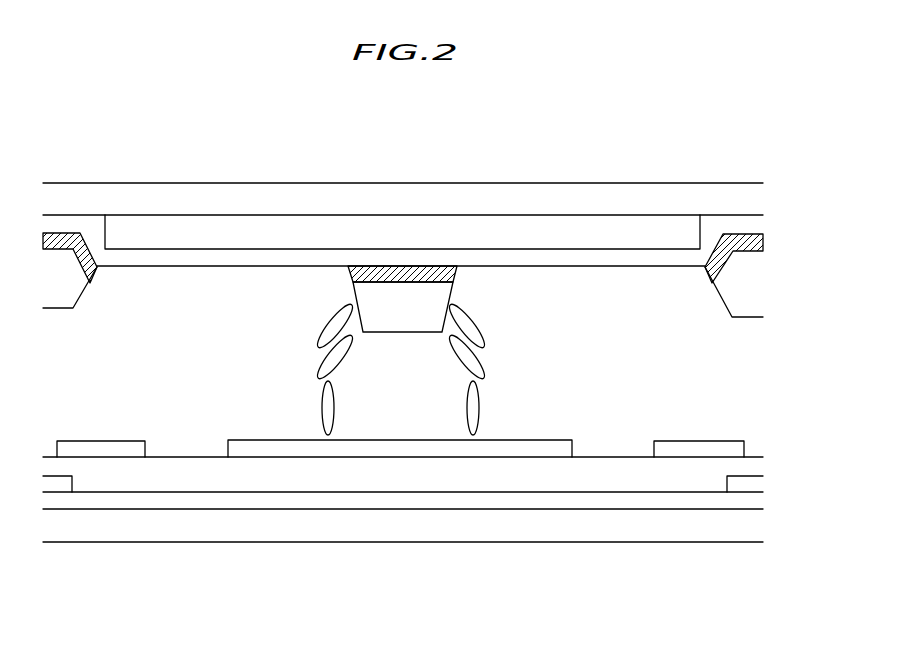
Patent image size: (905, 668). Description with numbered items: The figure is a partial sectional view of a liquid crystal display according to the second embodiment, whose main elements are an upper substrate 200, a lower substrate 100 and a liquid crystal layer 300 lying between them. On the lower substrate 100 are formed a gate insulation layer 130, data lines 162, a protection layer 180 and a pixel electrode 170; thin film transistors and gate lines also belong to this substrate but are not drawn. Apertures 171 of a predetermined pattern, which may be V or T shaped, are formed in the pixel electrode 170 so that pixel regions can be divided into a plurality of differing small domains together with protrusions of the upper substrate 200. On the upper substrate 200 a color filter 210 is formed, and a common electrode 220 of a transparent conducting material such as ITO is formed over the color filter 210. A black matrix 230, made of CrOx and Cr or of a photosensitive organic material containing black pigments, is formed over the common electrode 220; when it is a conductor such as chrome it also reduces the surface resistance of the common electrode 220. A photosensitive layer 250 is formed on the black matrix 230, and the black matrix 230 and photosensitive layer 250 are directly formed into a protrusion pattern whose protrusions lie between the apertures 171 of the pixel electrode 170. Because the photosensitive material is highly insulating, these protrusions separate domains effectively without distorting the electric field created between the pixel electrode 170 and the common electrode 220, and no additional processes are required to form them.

The lower substrate 100 is at (382, 525).
The gate insulation layer 130 is at (292, 498).
The data lines 162 is at (57, 487).
The pixel electrode 170 is at (115, 452).
The apertures 171 is at (175, 430).
The protection layer 180 is at (518, 478).
The upper substrate 200 is at (203, 196).
The color filter 210 is at (627, 225).
The common electrode 220 is at (297, 257).
The black matrix 230 is at (432, 268).
The photosensitive layer 250 is at (377, 290).
The liquid crystal layer 300 is at (738, 378).